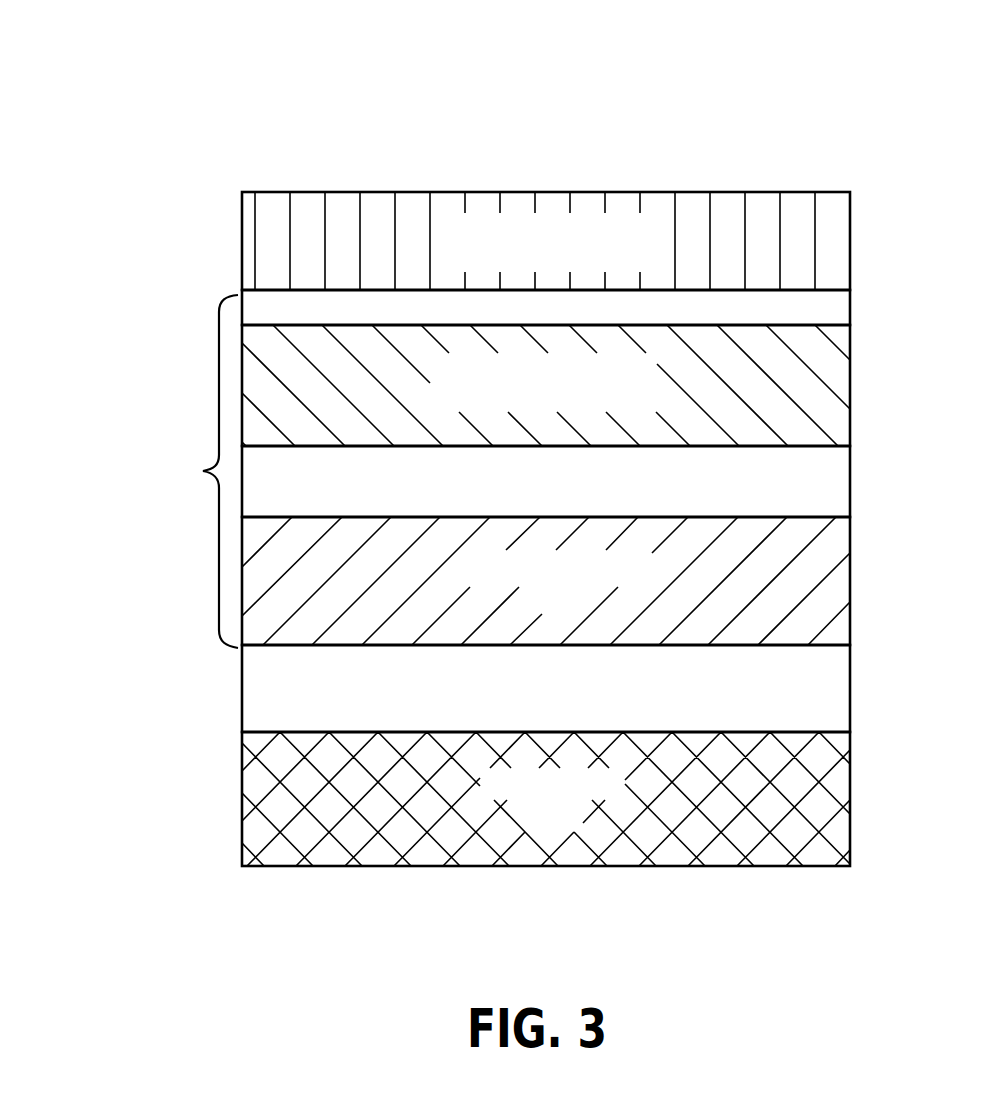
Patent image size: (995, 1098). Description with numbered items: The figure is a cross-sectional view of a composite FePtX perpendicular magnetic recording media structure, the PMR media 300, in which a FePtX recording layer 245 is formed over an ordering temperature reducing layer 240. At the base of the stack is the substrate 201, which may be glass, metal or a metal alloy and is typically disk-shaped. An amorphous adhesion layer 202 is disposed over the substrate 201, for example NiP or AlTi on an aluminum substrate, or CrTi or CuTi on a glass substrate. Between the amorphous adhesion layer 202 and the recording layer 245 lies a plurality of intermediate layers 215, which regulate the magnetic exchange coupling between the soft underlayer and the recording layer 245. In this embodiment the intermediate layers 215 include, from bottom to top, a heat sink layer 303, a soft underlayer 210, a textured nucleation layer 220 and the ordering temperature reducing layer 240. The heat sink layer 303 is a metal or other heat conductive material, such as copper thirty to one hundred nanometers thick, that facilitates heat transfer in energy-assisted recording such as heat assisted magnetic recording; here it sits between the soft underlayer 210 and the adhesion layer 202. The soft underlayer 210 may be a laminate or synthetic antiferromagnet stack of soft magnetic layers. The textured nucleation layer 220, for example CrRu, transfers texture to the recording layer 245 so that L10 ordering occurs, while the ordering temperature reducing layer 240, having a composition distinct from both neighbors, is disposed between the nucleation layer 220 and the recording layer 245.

The PMR media 300 is at (170, 147).
The recording layer 245 is at (523, 272).
The ordering temperature reducing layer 240 is at (771, 322).
The nucleation layer 220 is at (525, 410).
The soft underlayer 210 is at (567, 508).
The heat sink layer 303 is at (529, 610).
The amorphous adhesion layer 202 is at (531, 716).
The substrate 201 is at (532, 824).
The intermediate layers 215 is at (442, 469).